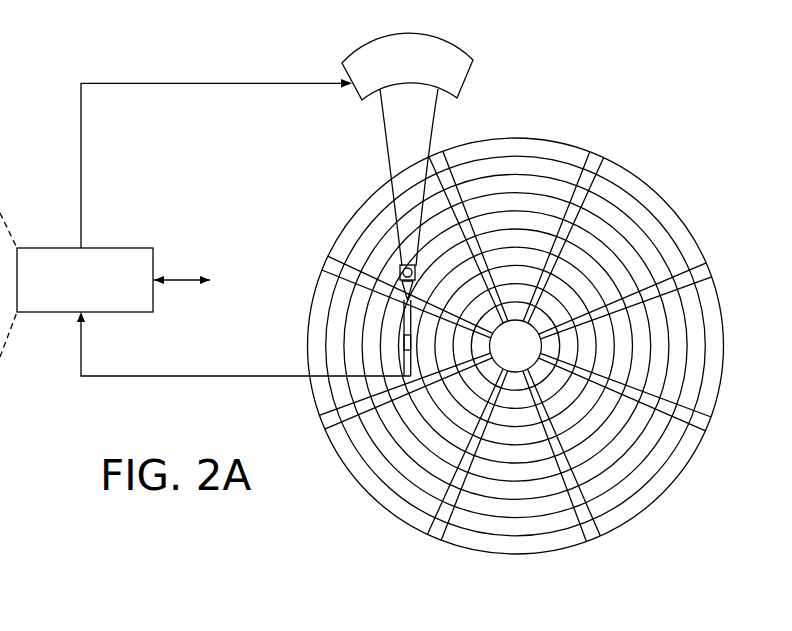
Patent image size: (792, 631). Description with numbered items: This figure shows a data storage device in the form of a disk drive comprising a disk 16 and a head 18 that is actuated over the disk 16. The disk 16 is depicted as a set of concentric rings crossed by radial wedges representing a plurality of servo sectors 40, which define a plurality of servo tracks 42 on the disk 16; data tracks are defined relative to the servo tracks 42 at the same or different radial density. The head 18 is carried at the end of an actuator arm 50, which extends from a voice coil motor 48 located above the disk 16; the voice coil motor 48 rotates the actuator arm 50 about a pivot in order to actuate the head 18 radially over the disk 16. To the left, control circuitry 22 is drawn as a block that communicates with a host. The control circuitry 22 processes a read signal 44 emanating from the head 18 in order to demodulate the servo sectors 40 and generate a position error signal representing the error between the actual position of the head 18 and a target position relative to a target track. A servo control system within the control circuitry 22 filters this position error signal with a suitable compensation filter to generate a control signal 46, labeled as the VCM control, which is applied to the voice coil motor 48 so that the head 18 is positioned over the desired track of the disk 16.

The disk 16 is at (664, 181).
The head 18 is at (394, 351).
The control circuitry 22 is at (120, 248).
The servo sectors 40 is at (520, 350).
The servo tracks 42 is at (515, 167).
The read signal 44 is at (212, 376).
The control signal 46 is at (81, 152).
The voice coil motor 48 is at (356, 96).
The actuator arm 50 is at (392, 168).